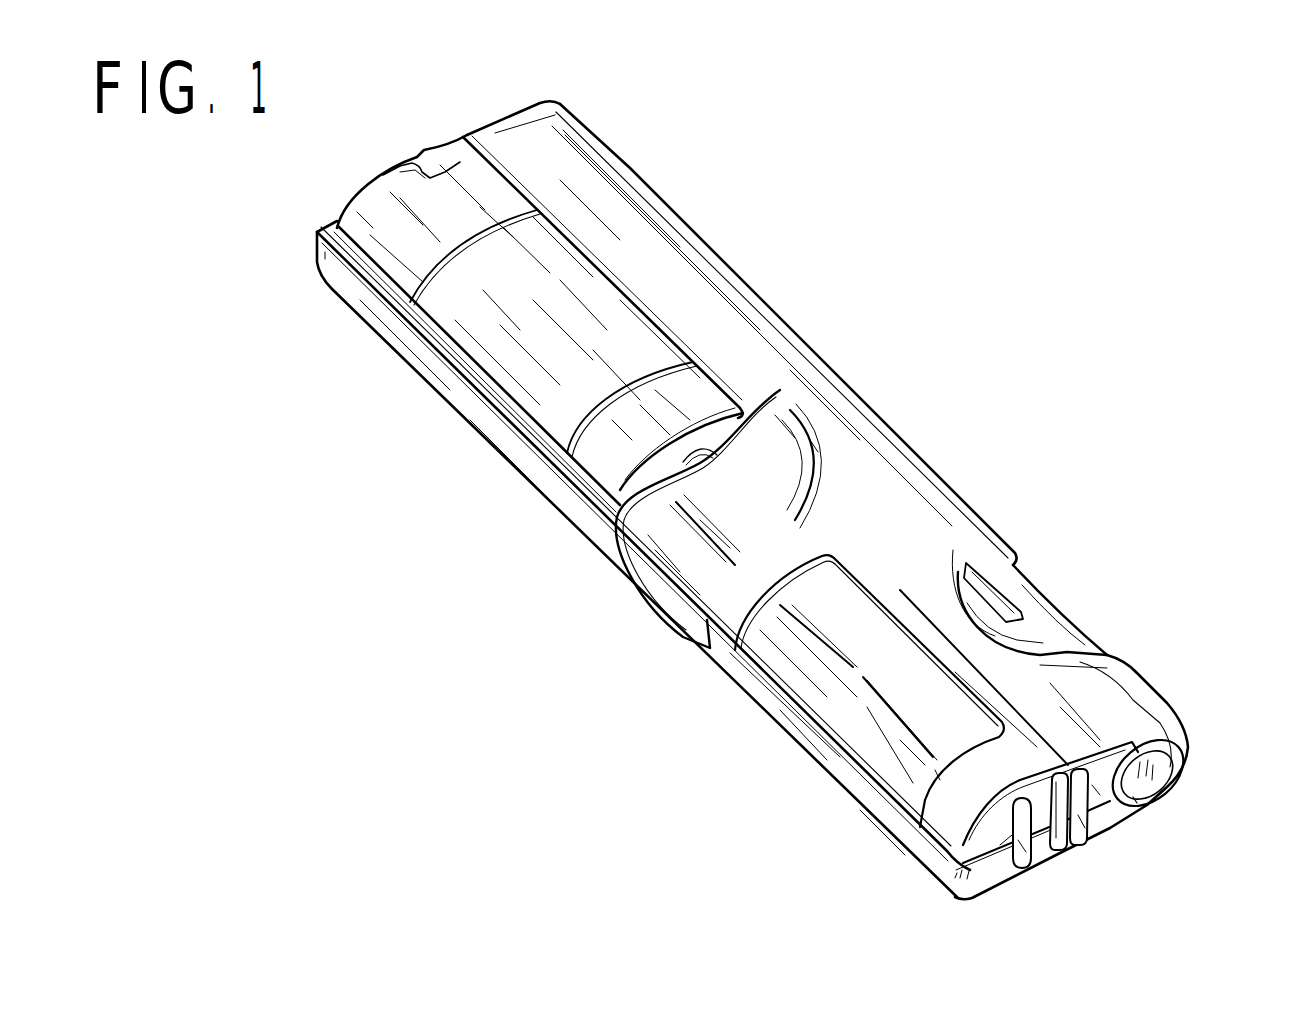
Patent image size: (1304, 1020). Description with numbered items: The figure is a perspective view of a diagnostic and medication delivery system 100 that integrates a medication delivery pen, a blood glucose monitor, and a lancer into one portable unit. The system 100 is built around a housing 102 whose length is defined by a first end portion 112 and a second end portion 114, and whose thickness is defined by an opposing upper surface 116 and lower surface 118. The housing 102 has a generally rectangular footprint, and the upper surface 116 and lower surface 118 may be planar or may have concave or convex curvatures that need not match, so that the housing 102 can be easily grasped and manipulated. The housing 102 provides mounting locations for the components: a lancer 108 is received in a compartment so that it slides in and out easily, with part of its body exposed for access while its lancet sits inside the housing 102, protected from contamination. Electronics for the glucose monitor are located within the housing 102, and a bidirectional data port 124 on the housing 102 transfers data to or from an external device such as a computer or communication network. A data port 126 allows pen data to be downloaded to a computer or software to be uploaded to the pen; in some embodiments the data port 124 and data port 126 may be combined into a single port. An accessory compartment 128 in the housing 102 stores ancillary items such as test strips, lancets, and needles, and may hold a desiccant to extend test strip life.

The diagnostic and medication delivery system 100 is at (400, 646).
The housing 102 is at (905, 502).
The lancer 108 is at (376, 210).
The first end portion 112 is at (540, 160).
The second end portion 114 is at (1117, 810).
The upper surface 116 is at (725, 332).
The lower surface 118 is at (857, 803).
The bidirectional data port 124 is at (1012, 841).
The data port 126 is at (1077, 813).
The accessory compartment 128 is at (792, 648).